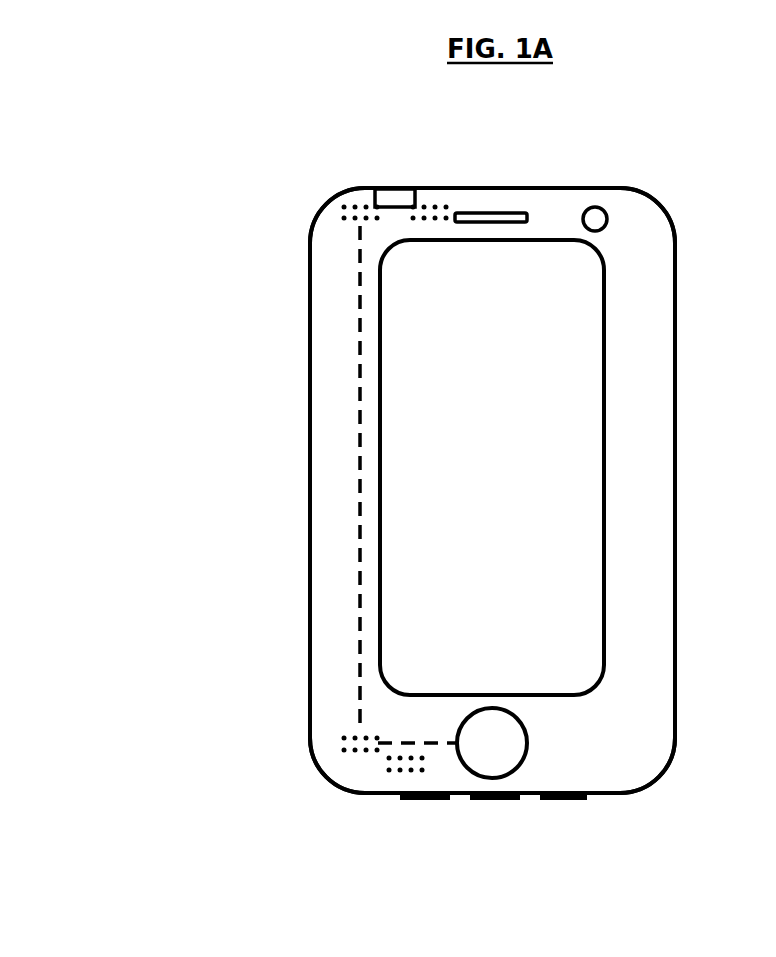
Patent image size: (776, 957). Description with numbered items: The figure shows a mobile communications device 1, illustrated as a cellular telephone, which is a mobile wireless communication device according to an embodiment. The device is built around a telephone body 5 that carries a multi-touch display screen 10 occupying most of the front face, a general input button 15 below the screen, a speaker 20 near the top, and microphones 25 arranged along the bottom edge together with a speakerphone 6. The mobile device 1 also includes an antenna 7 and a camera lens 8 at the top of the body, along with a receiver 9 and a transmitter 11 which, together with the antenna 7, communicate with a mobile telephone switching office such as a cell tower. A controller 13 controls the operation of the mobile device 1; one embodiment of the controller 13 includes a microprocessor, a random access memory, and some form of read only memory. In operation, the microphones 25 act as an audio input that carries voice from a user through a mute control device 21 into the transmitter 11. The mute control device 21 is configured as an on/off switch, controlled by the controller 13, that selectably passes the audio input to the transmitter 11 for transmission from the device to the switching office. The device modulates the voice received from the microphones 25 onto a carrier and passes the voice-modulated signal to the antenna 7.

The mobile communications device 1 is at (243, 370).
The telephone body 5 is at (310, 491).
The speakerphone 6 is at (495, 800).
The antenna 7 is at (395, 188).
The camera lens 8 is at (607, 218).
The receiver 9 is at (432, 207).
The multi-touch display screen 10 is at (604, 468).
The transmitter 11 is at (345, 212).
The controller 13 is at (390, 772).
The general input button 15 is at (528, 742).
The speaker 20 is at (530, 215).
The mute control device 21 is at (345, 745).
The microphones 25 is at (428, 800).